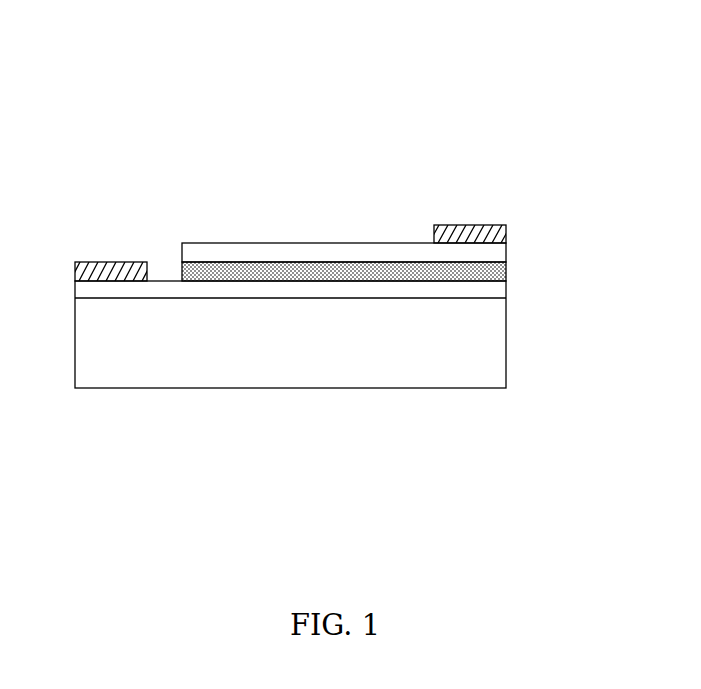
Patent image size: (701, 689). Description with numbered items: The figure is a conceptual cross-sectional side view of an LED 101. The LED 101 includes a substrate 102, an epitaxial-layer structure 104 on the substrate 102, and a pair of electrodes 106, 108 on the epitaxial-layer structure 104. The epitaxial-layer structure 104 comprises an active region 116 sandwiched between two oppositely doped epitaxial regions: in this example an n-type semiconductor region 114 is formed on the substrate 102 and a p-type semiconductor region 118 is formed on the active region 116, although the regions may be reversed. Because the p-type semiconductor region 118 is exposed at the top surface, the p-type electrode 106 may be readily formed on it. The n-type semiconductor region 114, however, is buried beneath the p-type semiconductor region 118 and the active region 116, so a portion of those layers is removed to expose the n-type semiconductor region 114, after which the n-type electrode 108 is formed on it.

The LED 101 is at (110, 88).
The substrate 102 is at (307, 351).
The epitaxial-layer structure 104 is at (582, 245).
The p-type electrode 106 is at (506, 232).
The n-type electrode 108 is at (75, 273).
The n-type semiconductor region 114 is at (75, 293).
The active region 116 is at (182, 270).
The p-type semiconductor region 118 is at (182, 260).